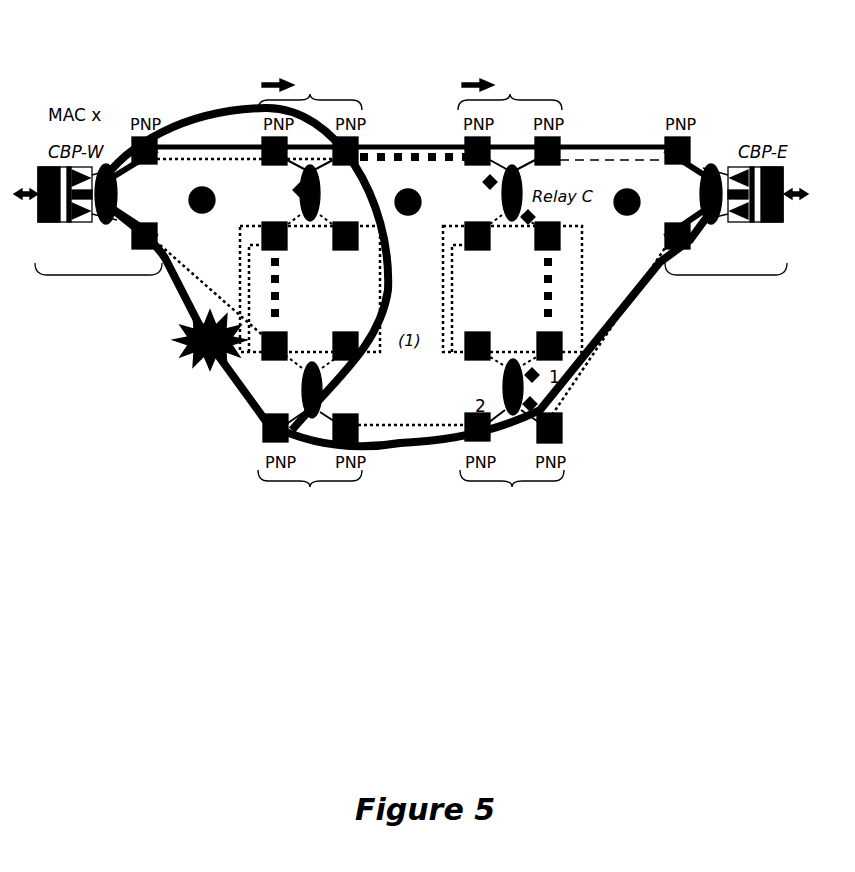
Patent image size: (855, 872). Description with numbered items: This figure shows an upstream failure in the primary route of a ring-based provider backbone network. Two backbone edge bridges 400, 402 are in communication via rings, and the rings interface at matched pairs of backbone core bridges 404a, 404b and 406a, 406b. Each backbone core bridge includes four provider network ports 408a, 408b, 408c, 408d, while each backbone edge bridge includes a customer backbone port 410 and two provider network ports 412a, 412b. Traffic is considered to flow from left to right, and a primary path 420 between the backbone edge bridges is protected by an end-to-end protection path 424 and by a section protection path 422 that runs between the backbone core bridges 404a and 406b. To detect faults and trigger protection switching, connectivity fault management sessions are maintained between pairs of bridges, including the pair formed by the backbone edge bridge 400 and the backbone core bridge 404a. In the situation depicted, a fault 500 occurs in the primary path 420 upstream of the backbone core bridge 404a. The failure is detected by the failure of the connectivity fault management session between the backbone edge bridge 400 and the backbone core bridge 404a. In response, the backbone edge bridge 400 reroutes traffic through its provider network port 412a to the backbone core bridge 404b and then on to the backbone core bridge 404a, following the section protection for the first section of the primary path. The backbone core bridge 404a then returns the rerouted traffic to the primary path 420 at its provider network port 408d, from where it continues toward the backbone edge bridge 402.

The backbone edge bridge 400 is at (98, 312).
The backbone edge bridge 402 is at (726, 312).
The backbone core bridge 404a is at (313, 445).
The backbone core bridge 404b is at (301, 141).
The backbone core bridge 406a is at (516, 445).
The backbone core bridge 406b is at (502, 141).
The provider network port 408a is at (351, 241).
The provider network port 408b is at (478, 239).
The provider network port 408c is at (360, 352).
The provider network port 408d is at (473, 345).
The customer backbone port 410 is at (406, 173).
The provider network port 412a is at (417, 129).
The provider network port 412b is at (412, 225).
The primary path 420 is at (193, 317).
The section protection path 422 is at (393, 143).
The e2e protection path 424 is at (193, 100).
The fault 500 is at (200, 370).